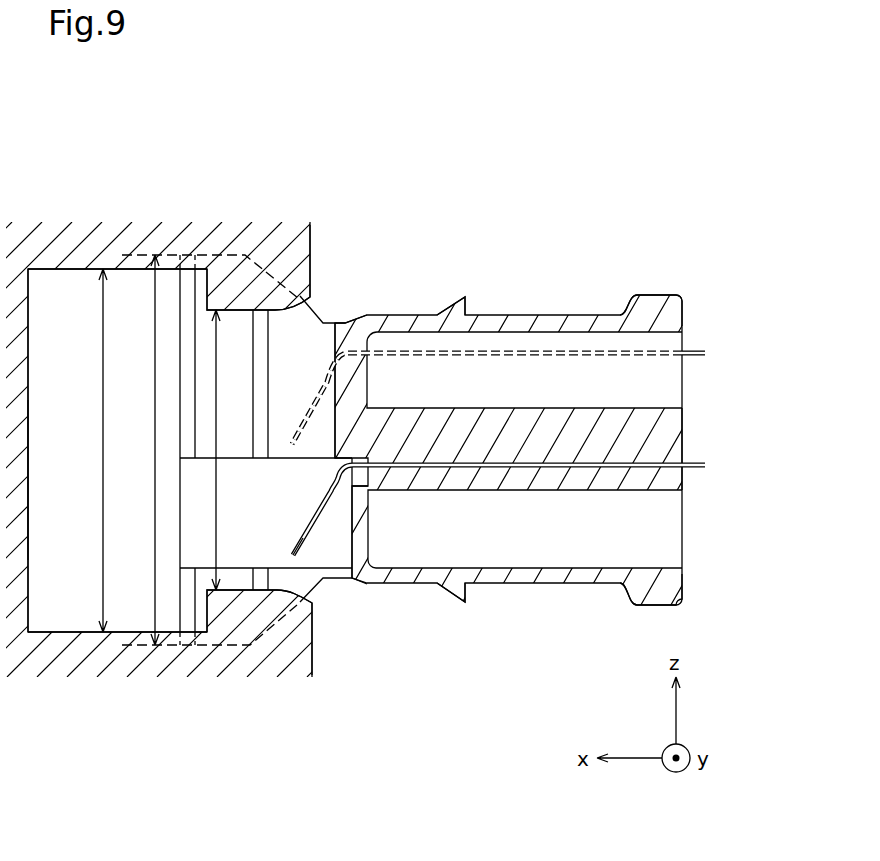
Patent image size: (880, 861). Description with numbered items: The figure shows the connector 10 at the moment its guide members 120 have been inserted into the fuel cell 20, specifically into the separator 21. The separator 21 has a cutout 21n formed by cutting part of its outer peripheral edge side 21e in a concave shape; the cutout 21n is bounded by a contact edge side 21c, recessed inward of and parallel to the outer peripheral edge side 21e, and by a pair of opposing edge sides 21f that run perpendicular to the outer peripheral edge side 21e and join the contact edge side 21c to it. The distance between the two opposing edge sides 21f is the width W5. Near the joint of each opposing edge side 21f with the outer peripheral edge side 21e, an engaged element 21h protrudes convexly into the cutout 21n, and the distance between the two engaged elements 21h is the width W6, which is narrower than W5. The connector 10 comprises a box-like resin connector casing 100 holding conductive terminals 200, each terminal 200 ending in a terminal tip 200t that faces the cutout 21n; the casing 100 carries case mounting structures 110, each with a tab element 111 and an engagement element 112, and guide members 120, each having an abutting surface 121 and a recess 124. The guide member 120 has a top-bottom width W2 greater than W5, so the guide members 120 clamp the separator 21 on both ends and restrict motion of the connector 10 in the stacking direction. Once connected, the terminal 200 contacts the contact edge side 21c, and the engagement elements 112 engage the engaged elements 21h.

The connector 10 is at (681, 223).
The fuel cell 20 is at (339, 172).
The separator 21 is at (240, 237).
The engaged element 21h is at (227, 285).
The outer peripheral edge side 21e is at (313, 236).
The opposing edge sides 21f is at (57, 271).
The cutout 21n is at (88, 394).
The contact edge side 21c is at (29, 478).
The connector casing 100 is at (684, 525).
The case mounting structure 110 is at (545, 312).
The tab element 111 is at (660, 297).
The engagement element 112 is at (452, 300).
The guide member 120 is at (307, 588).
The abutting surface 121 is at (237, 377).
The recess 124 is at (243, 540).
The terminal 200 is at (705, 353).
The wire tip 200t is at (297, 536).
The width of the cutout W5 is at (84, 450).
The width of the guide member W2 is at (138, 450).
The width between the engaged elements W6 is at (204, 450).